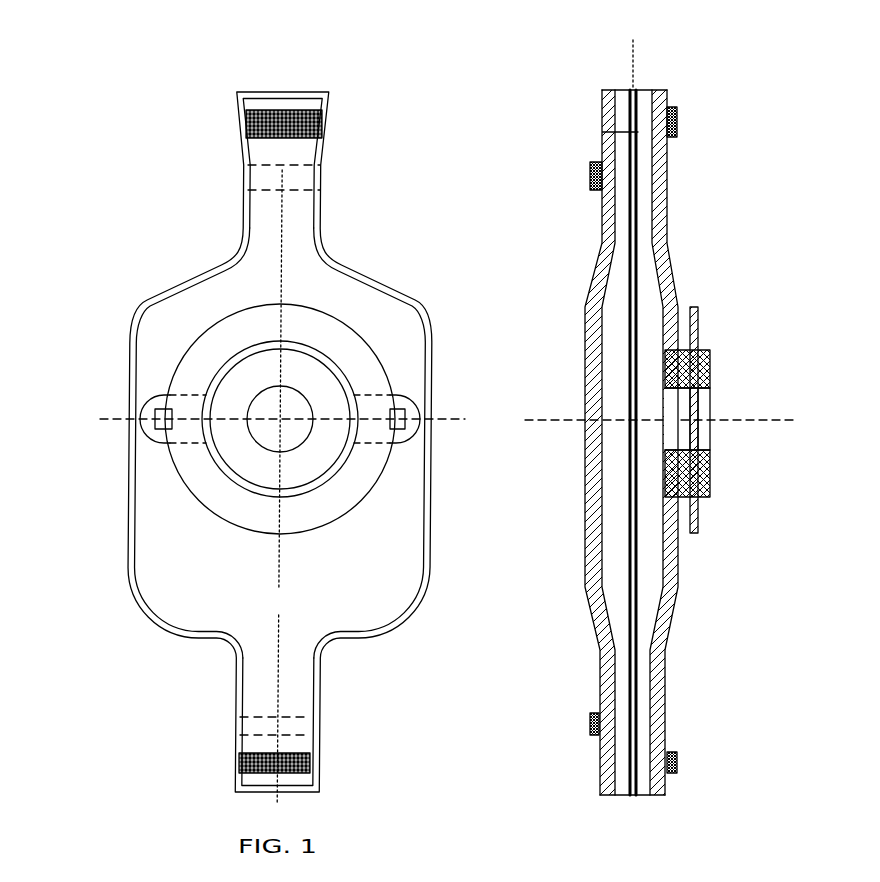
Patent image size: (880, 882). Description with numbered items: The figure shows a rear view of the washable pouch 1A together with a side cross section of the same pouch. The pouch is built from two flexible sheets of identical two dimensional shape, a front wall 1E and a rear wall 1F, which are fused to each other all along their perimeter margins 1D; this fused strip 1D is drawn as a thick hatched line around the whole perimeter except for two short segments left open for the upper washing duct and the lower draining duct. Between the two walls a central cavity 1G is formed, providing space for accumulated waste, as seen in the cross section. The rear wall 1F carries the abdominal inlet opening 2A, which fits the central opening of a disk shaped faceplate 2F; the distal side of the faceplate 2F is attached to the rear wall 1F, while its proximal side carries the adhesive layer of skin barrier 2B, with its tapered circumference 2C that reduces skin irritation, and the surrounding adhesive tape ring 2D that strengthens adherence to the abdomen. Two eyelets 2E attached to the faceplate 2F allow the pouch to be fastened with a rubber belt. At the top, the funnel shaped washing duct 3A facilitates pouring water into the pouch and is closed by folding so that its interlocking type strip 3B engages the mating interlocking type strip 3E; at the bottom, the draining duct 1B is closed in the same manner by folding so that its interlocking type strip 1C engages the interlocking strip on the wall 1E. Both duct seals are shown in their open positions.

The washable pouch 1A is at (170, 345).
The draining duct 1B is at (260, 703).
The interlocking type strip 1C is at (237, 763).
The fused perimeter margins 1D is at (317, 210).
The front wall 1E is at (588, 345).
The rear wall 1F is at (373, 633).
The central cavity 1G is at (625, 322).
The abdominal inlet opening 2A is at (292, 430).
The adhesive layer of skin barrier 2B is at (303, 460).
The tapered circumference 2C is at (322, 490).
The adhesive tape ring 2D is at (328, 600).
The eyelets 2E is at (145, 430).
The faceplate 2F is at (672, 363).
The washing duct 3A is at (277, 213).
The interlocking type strip 3B is at (245, 128).
The interlocking type strip 3E is at (590, 175).